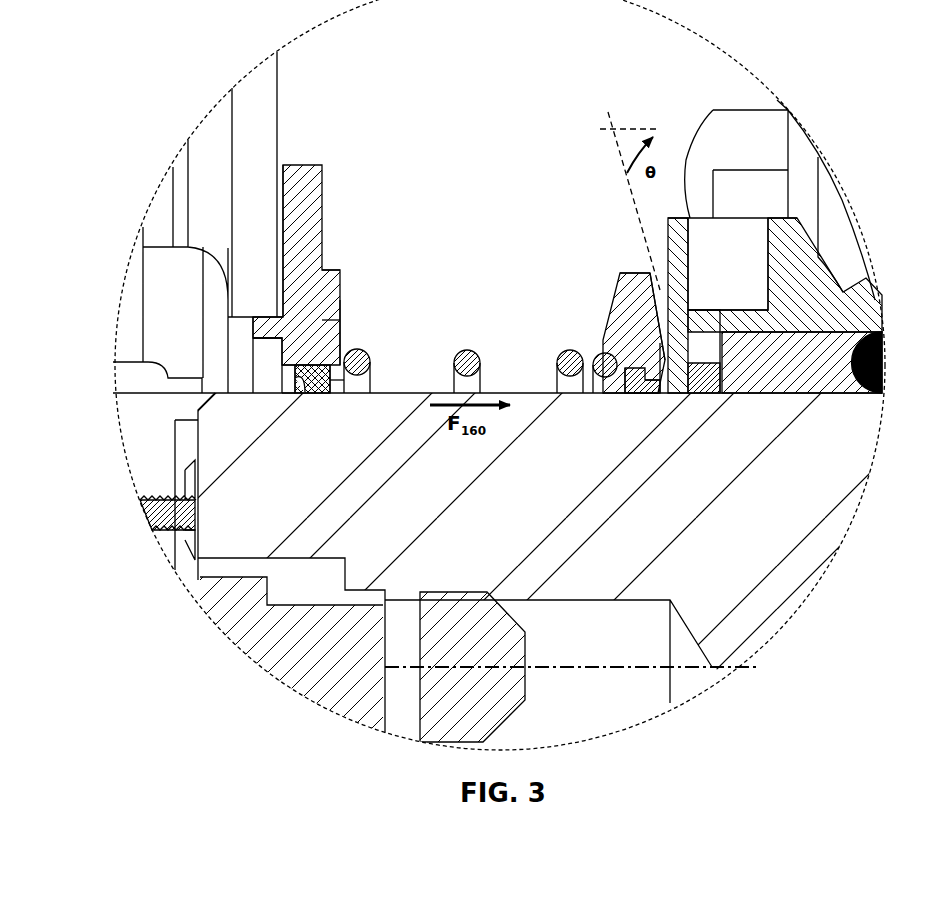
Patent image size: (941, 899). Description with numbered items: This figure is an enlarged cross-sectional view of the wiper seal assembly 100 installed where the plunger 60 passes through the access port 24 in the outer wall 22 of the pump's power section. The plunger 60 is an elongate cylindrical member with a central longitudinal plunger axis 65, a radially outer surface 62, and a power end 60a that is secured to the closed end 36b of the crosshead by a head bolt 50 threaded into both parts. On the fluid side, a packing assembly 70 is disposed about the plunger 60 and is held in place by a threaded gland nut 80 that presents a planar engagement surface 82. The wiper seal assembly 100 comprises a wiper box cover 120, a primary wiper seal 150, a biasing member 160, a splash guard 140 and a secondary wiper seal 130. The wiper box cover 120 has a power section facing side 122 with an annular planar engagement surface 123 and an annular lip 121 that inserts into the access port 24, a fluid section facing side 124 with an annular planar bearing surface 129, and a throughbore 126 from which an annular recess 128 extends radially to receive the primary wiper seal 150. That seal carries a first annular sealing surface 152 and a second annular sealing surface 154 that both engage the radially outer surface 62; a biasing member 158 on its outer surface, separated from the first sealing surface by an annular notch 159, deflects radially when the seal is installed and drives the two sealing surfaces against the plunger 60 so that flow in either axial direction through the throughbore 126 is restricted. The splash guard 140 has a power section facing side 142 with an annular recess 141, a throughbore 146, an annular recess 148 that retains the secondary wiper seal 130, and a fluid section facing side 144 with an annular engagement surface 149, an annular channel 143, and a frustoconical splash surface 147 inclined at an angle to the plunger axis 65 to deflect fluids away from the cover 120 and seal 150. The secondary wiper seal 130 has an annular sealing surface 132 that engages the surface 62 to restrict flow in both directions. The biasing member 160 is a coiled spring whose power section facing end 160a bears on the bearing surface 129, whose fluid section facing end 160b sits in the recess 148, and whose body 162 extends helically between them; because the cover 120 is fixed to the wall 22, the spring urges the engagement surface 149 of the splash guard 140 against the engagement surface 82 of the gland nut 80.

The wiper seal assembly 100 is at (545, 68).
The outer wall 22 is at (277, 82).
The access port 24 is at (232, 323).
The wiper box cover 120 is at (275, 230).
The annular lip 121 is at (267, 315).
The power section facing side 122 is at (283, 208).
The annular planar engagement surface 123 is at (283, 243).
The fluid section facing side 124 is at (333, 190).
The annular planar bearing surface 129 is at (342, 268).
The annular recess 128 is at (320, 365).
The primary wiper seal 150 is at (318, 395).
The first annular sealing surface 152 is at (292, 398).
The second annular sealing surface 154 is at (337, 397).
The throughbore 126 is at (353, 400).
The biasing member 158 is at (293, 365).
The annular notch 159 is at (292, 378).
The biasing member 160 is at (480, 332).
The power section facing end 160a is at (343, 350).
The fluid section facing end 160b is at (606, 352).
The body 162 is at (470, 350).
The splash guard 140 is at (601, 335).
The power section facing side 142 is at (614, 283).
The annular recess 148 is at (637, 367).
The secondary wiper seal 130 is at (638, 395).
The annular recess 141 is at (607, 395).
The annular sealing surface 132 is at (657, 398).
The gland nut 80 is at (825, 268).
The planar engagement surface 82 is at (668, 250).
The splash surface 147 is at (683, 258).
The fluid section facing side 144 is at (668, 300).
The annular engagement surface 149 is at (667, 340).
The annular channel 143 is at (680, 388).
The throughbore 146 is at (674, 375).
The radially outer surface 62 is at (797, 388).
The packing assembly 70 is at (868, 325).
The plunger 60 is at (842, 477).
The power end 60a is at (198, 448).
The closed end 36b is at (190, 545).
The head bolt 50 is at (257, 643).
The plunger axis 65 is at (638, 670).